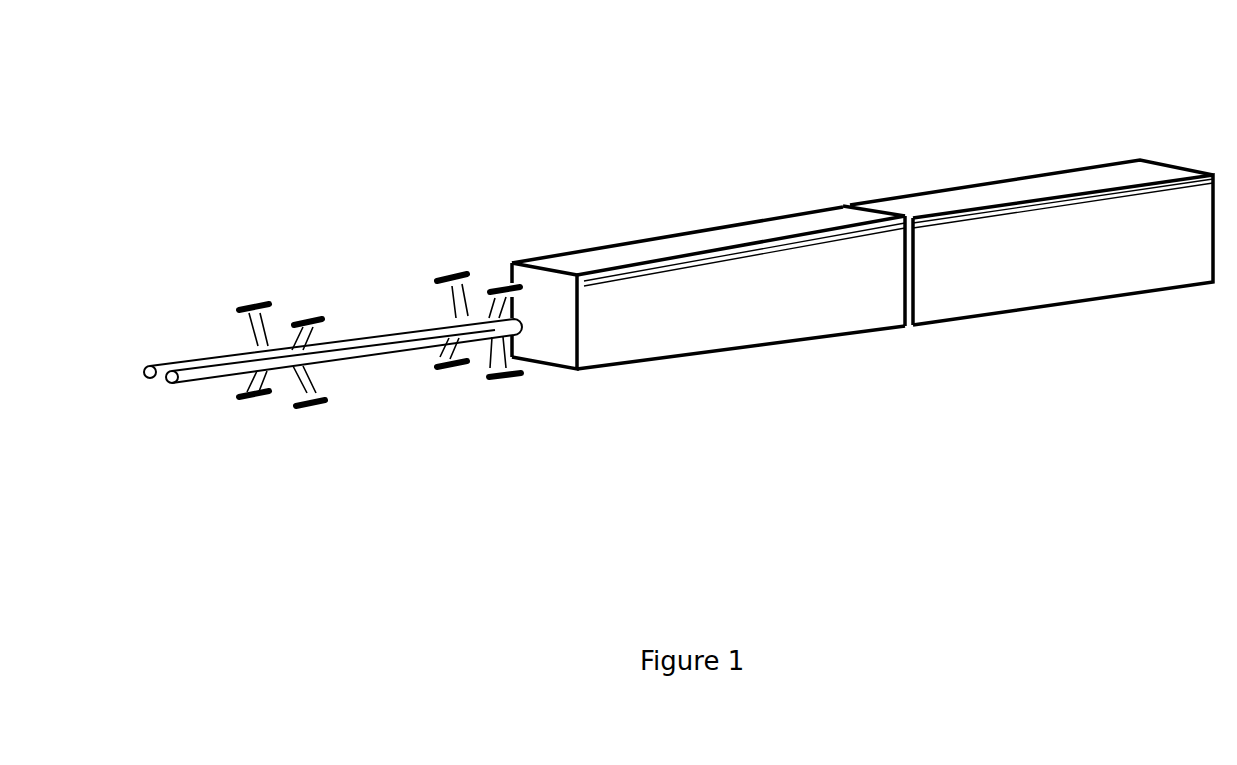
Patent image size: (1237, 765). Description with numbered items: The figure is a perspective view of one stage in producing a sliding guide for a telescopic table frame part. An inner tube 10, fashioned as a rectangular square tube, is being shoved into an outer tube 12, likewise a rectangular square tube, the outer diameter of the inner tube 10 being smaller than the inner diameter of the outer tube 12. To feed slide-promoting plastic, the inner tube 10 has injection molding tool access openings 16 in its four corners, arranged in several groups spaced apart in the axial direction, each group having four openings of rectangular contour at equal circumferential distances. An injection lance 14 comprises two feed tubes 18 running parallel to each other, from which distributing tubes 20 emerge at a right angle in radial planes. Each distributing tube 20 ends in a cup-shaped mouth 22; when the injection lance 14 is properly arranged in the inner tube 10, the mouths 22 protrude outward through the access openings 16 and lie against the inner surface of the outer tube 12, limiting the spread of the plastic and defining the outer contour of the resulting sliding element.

The inner tube 10 is at (648, 247).
The outer tube 12 is at (1075, 182).
The injection lance 14 is at (344, 324).
The injection molding tool access openings 16 is at (517, 261).
The feed tubes 18 is at (405, 327).
The distributing tubes 20 is at (234, 319).
The cup-shaped mouth 22 is at (242, 303).